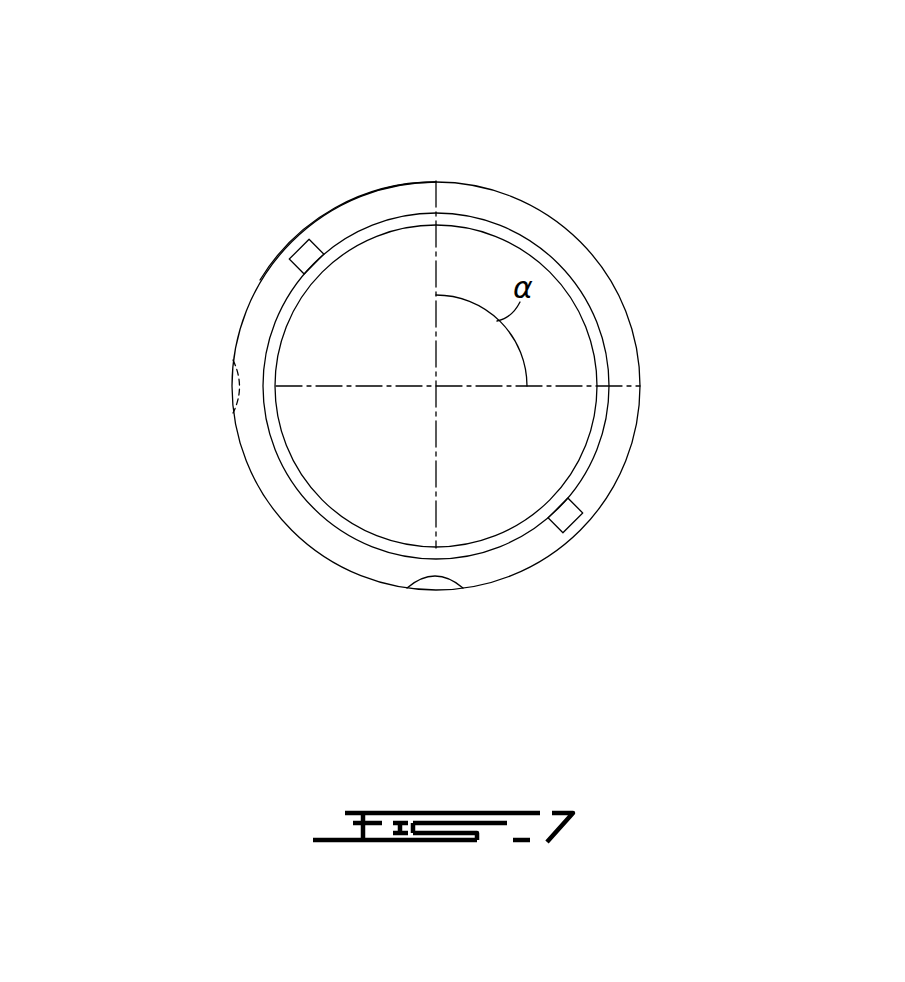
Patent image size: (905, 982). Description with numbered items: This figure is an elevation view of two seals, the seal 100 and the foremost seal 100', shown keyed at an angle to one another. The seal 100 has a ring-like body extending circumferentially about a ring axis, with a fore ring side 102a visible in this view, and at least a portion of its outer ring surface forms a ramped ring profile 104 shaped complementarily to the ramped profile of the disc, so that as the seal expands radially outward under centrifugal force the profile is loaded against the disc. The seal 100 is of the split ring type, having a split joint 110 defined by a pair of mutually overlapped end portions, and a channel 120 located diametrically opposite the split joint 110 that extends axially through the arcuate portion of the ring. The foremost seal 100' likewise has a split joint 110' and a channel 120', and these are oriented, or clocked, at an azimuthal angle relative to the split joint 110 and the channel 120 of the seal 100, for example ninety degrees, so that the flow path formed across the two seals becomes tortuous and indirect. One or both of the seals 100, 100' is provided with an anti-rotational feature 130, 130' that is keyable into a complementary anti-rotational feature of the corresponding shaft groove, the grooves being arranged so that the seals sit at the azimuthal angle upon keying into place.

The seal 100 is at (436, 349).
The foremost seal 100' is at (487, 386).
The fore ring side 102a is at (367, 210).
The ramped ring profile 104 is at (285, 316).
The split joint 110 is at (474, 278).
The split joint of the foremost seal 110' is at (554, 413).
The channel 120 is at (435, 653).
The channel of the foremost seal 120' is at (138, 393).
The anti-rotational feature 130 is at (275, 210).
The anti-rotational feature of the foremost seal 130' is at (636, 548).